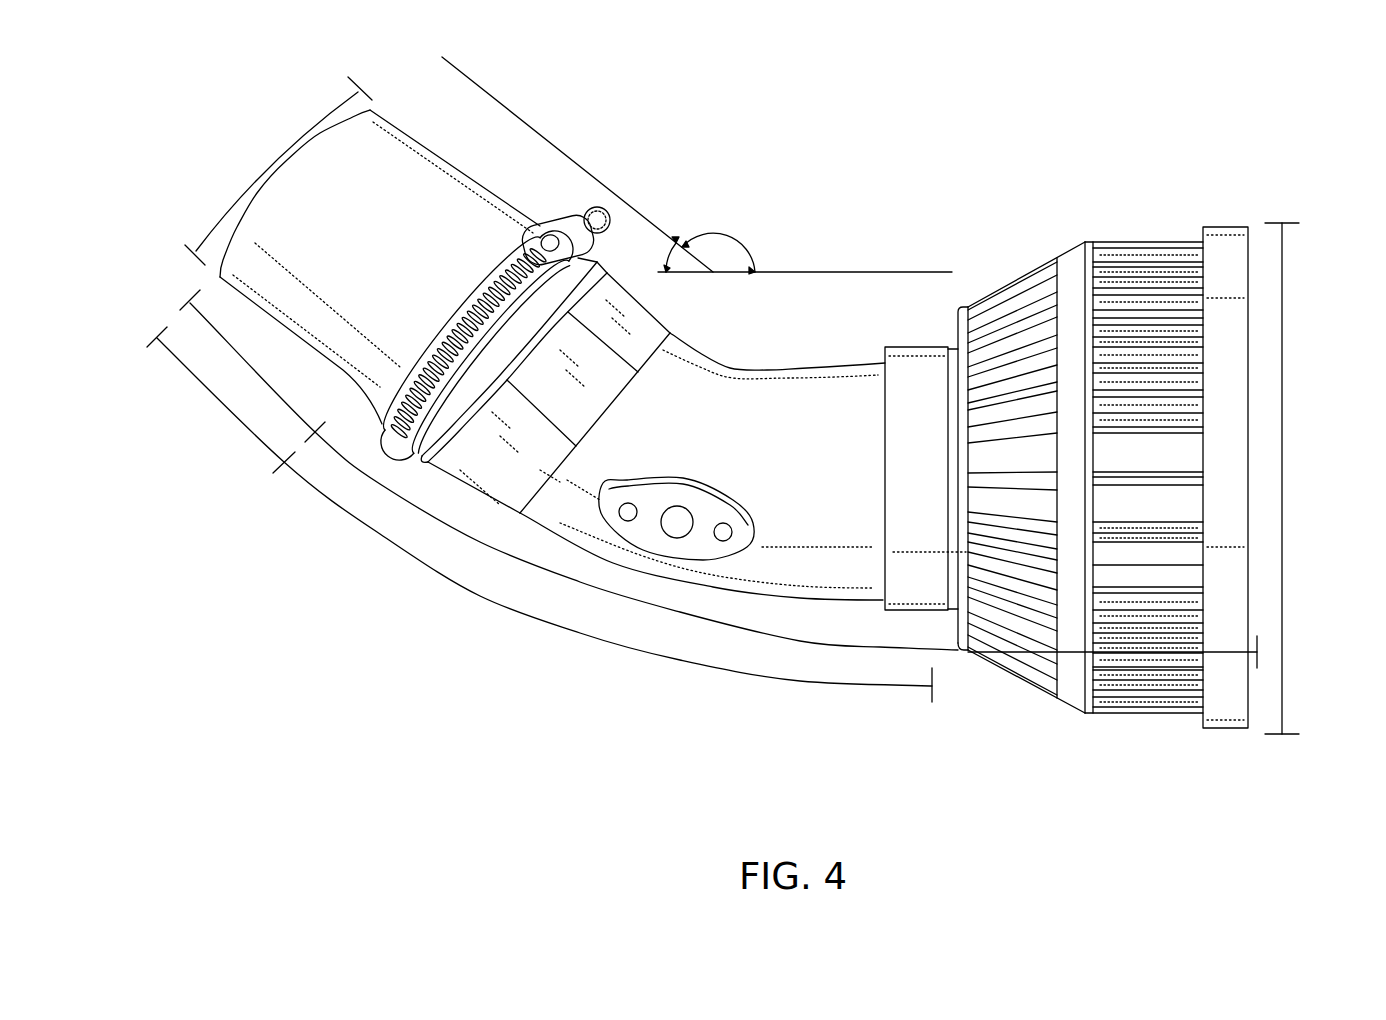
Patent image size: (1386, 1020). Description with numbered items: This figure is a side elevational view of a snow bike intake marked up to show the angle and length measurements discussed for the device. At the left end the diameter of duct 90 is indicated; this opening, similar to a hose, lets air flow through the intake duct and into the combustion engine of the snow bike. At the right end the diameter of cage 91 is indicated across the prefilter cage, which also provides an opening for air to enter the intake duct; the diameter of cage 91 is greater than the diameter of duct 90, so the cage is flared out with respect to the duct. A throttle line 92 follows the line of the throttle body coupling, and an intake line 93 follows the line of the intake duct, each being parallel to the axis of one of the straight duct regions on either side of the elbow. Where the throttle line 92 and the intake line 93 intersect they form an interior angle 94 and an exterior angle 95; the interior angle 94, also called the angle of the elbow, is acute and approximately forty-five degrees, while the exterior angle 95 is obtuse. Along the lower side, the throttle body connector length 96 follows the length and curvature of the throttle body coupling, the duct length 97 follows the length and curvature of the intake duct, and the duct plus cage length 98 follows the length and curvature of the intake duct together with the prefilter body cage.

The diameter of duct 90 is at (263, 155).
The diameter of cage 91 is at (1283, 335).
The throttle line 92 is at (500, 100).
The intake line 93 is at (898, 272).
The interior angle 94 is at (663, 256).
The exterior angle 95 is at (723, 242).
The throttle body connector length 96 is at (272, 393).
The duct length 97 is at (523, 613).
The duct plus cage length 98 is at (735, 630).